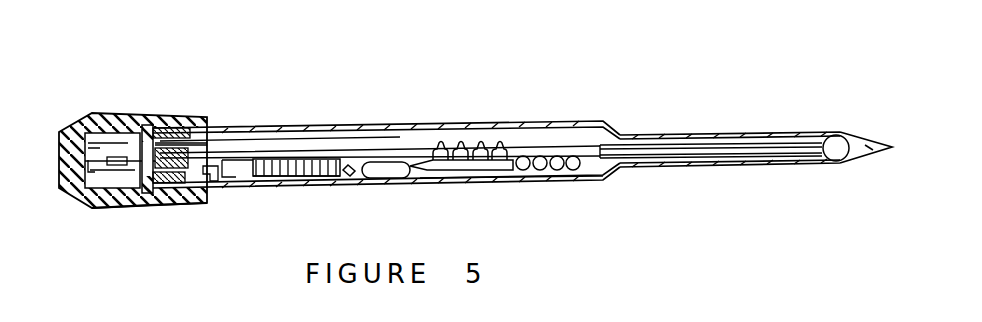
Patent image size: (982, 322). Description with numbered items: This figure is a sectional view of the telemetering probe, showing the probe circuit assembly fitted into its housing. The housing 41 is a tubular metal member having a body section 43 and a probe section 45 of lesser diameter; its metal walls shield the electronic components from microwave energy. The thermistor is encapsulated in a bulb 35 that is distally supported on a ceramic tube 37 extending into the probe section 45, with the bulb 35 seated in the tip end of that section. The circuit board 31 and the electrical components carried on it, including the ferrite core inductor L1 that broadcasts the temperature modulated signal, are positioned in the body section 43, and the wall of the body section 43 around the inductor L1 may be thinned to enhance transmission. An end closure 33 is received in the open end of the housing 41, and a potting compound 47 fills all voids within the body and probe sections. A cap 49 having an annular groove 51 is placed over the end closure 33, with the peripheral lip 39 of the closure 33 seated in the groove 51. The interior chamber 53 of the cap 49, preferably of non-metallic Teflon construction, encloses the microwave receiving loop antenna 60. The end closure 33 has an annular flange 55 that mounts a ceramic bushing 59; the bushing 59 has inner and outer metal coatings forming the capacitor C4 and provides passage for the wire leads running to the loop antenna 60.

The circuit board 31 is at (333, 155).
The end closure 33 is at (147, 130).
The bulb 35 is at (836, 160).
The ceramic tube 37 is at (717, 150).
The peripheral lip 39 is at (155, 210).
The housing 41 is at (538, 116).
The body section 43 is at (553, 180).
The probe section 45 is at (694, 134).
The potting compound 47 is at (413, 138).
The cap 49 is at (120, 208).
The annular groove 51 is at (173, 208).
The interior chamber 53 is at (101, 134).
The annular flange 55 is at (214, 131).
The ceramic bushing 59 is at (220, 128).
The loop antenna 60 is at (106, 172).
The capacitor C4 is at (236, 188).
The ferrite core inductor L1 is at (330, 176).